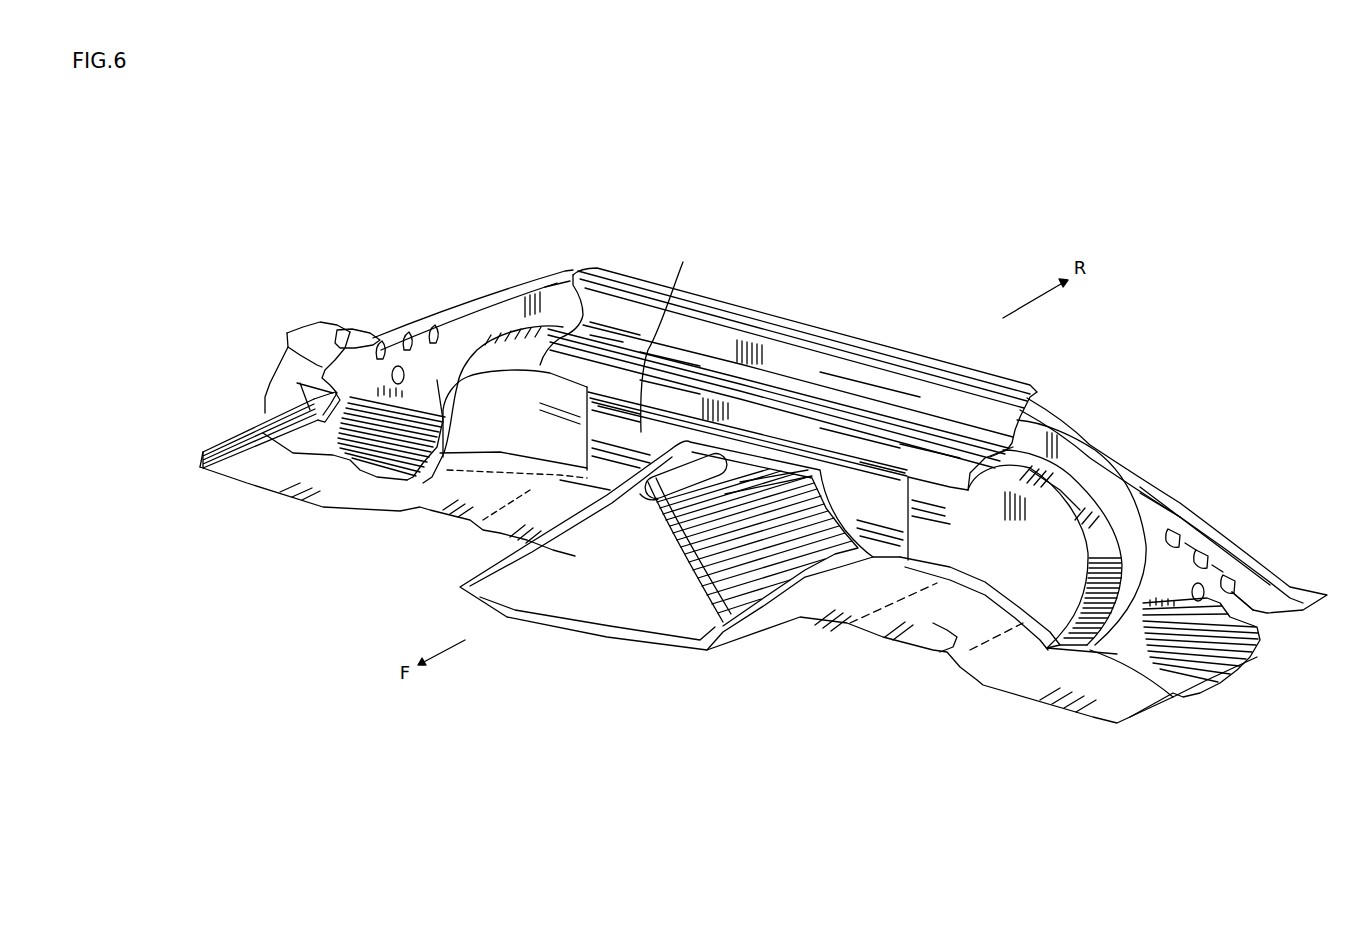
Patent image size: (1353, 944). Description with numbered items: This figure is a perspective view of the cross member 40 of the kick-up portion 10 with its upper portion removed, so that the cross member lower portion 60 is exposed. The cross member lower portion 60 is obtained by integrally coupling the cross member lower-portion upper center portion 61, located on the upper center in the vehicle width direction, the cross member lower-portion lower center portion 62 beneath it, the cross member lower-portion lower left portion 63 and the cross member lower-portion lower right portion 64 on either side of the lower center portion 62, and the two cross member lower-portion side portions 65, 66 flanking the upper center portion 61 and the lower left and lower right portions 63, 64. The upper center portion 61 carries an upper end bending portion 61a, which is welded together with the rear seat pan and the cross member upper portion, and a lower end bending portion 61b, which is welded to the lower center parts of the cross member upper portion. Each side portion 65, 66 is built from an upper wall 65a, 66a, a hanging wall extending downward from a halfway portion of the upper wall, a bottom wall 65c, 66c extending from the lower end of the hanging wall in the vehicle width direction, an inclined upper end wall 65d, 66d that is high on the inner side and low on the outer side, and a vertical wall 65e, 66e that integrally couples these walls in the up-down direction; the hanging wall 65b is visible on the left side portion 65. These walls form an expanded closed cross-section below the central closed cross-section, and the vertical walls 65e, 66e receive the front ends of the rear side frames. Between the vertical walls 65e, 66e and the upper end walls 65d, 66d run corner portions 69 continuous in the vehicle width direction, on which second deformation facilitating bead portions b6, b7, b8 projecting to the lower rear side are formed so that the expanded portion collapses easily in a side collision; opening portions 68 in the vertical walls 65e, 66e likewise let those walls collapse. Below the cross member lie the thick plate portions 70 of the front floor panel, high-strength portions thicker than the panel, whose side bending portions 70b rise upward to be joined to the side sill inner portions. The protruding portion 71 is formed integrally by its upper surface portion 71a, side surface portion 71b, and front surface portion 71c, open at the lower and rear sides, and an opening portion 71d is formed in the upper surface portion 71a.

The kick-up portion 10 is at (788, 334).
The cross member 40 is at (717, 274).
The cross member lower portion 60 is at (847, 334).
The cross member lower-portion upper center portion 61 is at (780, 376).
The upper end bending portion 61a is at (737, 310).
The lower end bending portion 61b is at (777, 420).
The cross member lower-portion lower center portion 62 is at (683, 262).
The cross member lower-portion lower left portion 63 is at (958, 563).
The cross member lower-portion lower right portion 64 is at (545, 430).
The cross member lower-portion side portion 65 is at (1120, 564).
The upper wall 65a is at (1060, 490).
The hanging wall 65b is at (1097, 583).
The bottom wall 65c is at (1193, 687).
The upper end wall 65d is at (1223, 540).
The vertical wall 65e is at (1143, 500).
The cross member lower-portion side portion 66 is at (795, 421).
The upper wall 66a is at (543, 333).
The bottom wall 66c is at (315, 447).
The upper end wall 66d is at (393, 337).
The vertical wall 66e is at (427, 407).
The opening portion 68 is at (347, 378).
The corner portion 69 is at (453, 317).
The thick plate portion 70 is at (428, 509).
The side bending portion 70b is at (207, 451).
The protruding portion 71 is at (666, 557).
The upper surface portion 71a is at (733, 493).
The side surface portion 71b is at (737, 613).
The front surface portion 71c is at (612, 587).
The opening portion 71d is at (650, 507).
The second deformation facilitating bead portion b6 is at (432, 328).
The second deformation facilitating bead portion b7 is at (1223, 562).
The second deformation facilitating bead portion b8 is at (378, 338).